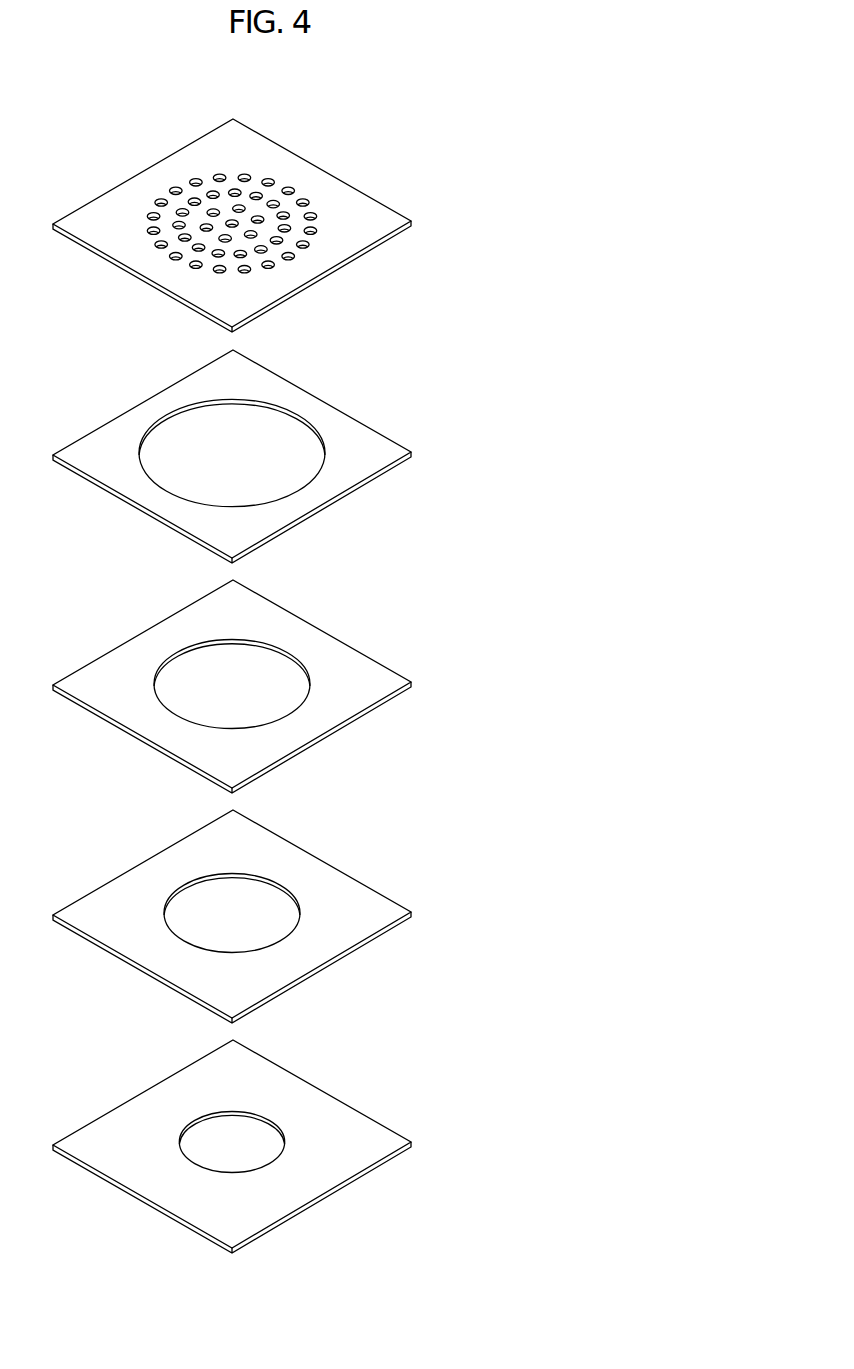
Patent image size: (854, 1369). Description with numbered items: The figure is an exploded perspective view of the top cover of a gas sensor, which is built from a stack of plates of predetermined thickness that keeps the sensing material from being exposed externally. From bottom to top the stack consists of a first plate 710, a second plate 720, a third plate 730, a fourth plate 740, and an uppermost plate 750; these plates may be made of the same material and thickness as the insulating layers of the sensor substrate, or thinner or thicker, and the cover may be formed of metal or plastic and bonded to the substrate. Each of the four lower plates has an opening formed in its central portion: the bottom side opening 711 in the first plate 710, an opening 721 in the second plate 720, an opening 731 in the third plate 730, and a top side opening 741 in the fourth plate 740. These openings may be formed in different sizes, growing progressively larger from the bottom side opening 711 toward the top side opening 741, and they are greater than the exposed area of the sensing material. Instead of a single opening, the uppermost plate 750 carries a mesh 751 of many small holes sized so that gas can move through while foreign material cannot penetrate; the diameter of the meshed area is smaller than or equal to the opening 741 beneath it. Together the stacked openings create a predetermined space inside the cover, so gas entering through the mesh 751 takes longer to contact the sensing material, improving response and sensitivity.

The first plate 710 is at (410, 1143).
The bottom side opening 711 is at (262, 1132).
The second plate 720 is at (410, 913).
The opening 721 is at (277, 897).
The third plate 730 is at (410, 683).
The opening 731 is at (281, 661).
The fourth plate 740 is at (410, 453).
The top side opening 741 is at (281, 431).
The uppermost plate 750 is at (410, 221).
The mesh 751 is at (290, 187).